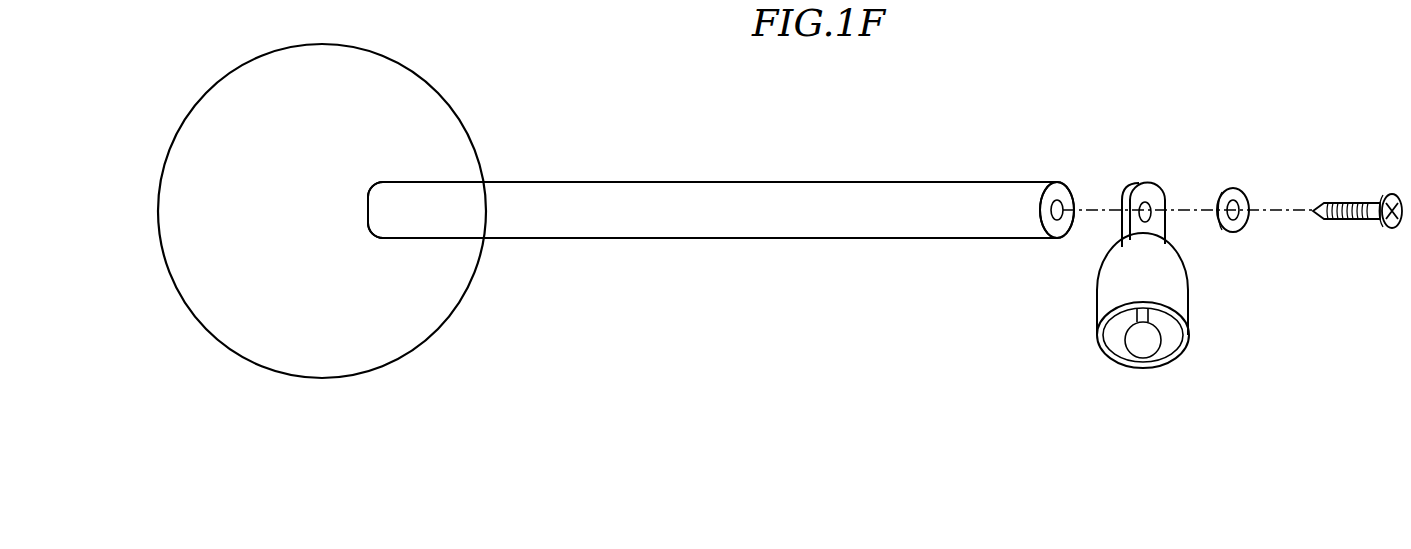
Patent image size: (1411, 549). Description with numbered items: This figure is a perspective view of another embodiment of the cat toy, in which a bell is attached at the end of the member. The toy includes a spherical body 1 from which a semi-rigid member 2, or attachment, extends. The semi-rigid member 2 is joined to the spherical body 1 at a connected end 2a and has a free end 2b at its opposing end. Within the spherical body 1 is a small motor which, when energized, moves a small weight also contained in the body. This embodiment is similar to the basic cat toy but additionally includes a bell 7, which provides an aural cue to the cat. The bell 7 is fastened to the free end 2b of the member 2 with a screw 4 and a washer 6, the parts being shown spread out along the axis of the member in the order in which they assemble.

The spherical body 1 is at (377, 102).
The semi-rigid member 2 is at (665, 197).
The connected end 2a is at (380, 212).
The free end 2b is at (1038, 200).
The screw 4 is at (1370, 198).
The washer 6 is at (1233, 186).
The bell 7 is at (1100, 349).